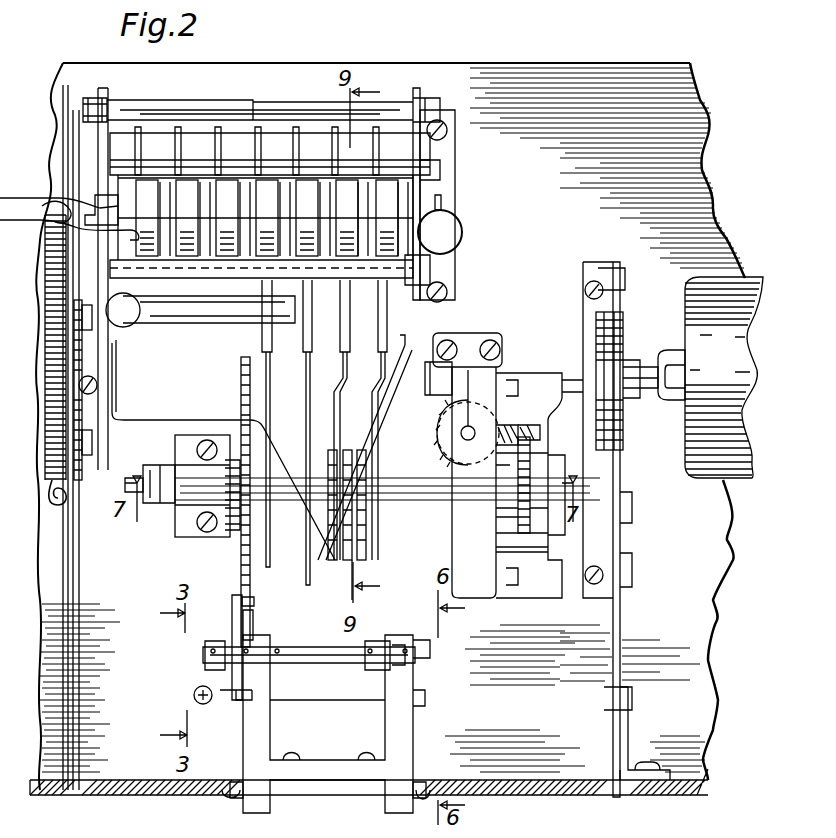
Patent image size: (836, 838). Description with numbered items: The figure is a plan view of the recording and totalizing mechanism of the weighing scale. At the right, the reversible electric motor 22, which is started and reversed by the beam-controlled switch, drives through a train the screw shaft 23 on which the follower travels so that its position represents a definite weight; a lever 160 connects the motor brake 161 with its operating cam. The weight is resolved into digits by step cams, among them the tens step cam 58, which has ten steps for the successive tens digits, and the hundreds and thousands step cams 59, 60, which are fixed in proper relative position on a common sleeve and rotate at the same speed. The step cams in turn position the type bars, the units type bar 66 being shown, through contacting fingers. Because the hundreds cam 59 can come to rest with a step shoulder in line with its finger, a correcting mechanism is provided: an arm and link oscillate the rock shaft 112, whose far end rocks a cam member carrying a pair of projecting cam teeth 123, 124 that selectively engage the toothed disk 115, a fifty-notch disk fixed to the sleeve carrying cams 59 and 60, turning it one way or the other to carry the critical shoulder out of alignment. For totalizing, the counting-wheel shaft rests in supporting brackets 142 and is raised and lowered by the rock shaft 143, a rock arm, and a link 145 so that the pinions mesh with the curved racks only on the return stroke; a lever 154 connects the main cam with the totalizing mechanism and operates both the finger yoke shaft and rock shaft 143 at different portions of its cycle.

The reversible electric motor 22 is at (710, 377).
The screw shaft 23 is at (468, 440).
The tens step cam 58 is at (336, 570).
The hundreds step cam 59 is at (306, 575).
The thousands step cam 60 is at (271, 527).
The units type bar 66 is at (368, 552).
The rock shaft 112 is at (362, 660).
The toothed disk 115 is at (241, 394).
The cam tooth 123 is at (254, 601).
The cam tooth 124 is at (252, 612).
The supporting brackets 142 is at (69, 220).
The rock shaft 143 is at (415, 268).
The link 145 is at (60, 204).
The lever 154 is at (75, 592).
The lever 160 is at (620, 668).
The motor brake 161 is at (620, 450).